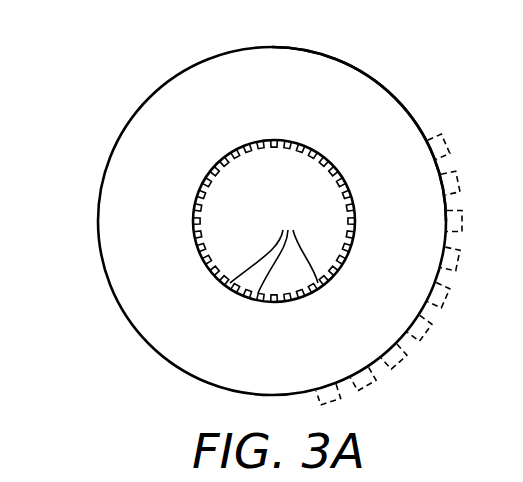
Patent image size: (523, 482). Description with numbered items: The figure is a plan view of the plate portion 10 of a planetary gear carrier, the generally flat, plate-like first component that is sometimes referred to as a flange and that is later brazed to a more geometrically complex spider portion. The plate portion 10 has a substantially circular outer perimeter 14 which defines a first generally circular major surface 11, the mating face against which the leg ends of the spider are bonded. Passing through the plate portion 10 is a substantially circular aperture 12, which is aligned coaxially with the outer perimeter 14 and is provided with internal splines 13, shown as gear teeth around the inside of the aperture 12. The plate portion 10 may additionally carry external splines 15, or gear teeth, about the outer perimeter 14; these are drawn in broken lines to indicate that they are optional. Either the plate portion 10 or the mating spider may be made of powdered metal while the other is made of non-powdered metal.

The plate portion 10 is at (138, 94).
The first major surface 11 is at (210, 107).
The circular aperture 12 is at (243, 210).
The internal splines 13 is at (274, 249).
The outer perimeter 14 is at (403, 98).
The external splines 15 is at (450, 300).